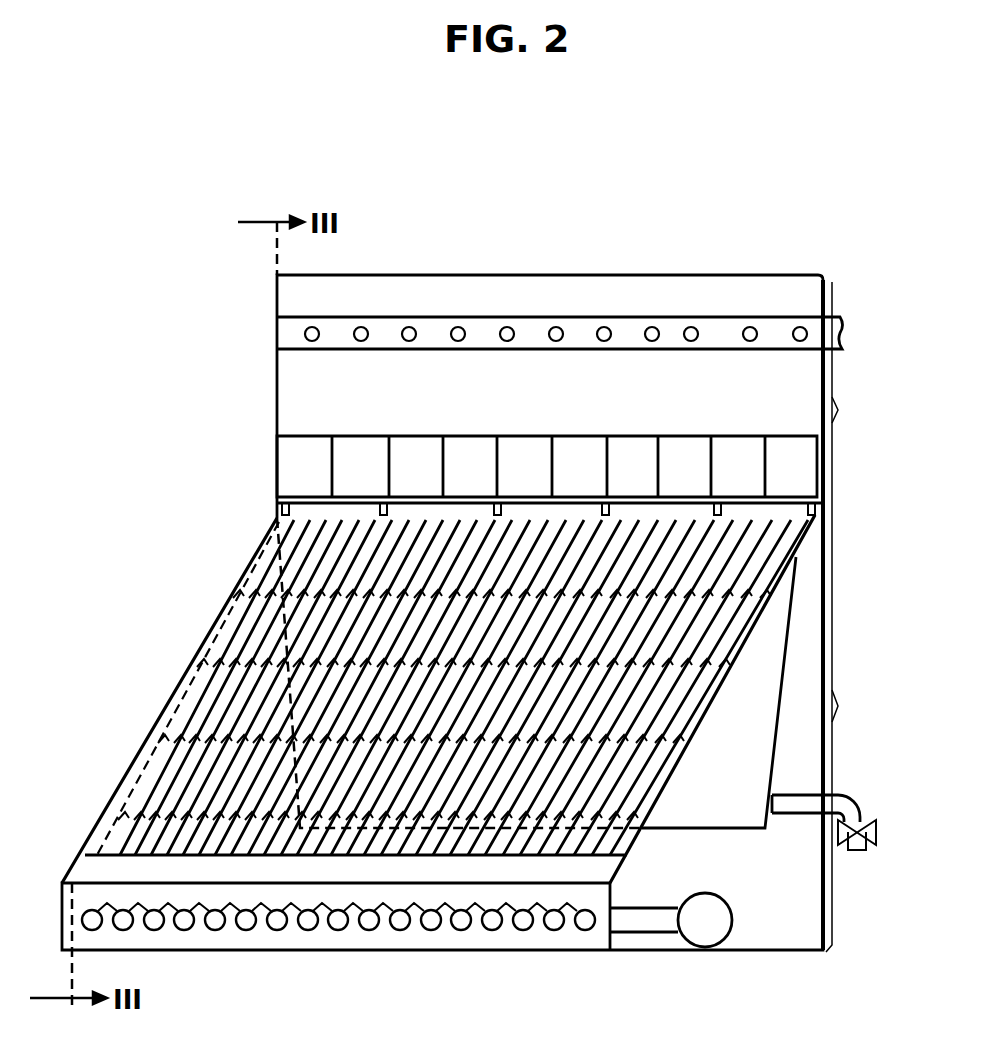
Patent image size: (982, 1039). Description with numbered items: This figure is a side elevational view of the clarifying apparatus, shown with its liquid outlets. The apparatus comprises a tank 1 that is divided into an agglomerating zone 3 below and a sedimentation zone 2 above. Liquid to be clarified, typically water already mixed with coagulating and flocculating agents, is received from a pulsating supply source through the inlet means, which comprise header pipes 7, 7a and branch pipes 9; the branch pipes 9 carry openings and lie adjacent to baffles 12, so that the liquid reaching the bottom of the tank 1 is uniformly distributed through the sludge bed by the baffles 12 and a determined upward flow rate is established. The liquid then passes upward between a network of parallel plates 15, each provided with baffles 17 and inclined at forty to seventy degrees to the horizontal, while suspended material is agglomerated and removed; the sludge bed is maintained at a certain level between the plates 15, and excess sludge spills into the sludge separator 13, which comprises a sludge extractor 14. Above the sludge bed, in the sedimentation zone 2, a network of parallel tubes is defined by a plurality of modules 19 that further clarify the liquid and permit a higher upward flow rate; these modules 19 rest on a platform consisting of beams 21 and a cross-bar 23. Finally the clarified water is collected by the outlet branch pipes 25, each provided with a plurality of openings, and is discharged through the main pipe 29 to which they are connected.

The tank 1 is at (277, 393).
The sedimentation zone 2 is at (844, 410).
The agglomerating zone 3 is at (846, 707).
The header pipe 7 is at (708, 934).
The header pipe 7a is at (650, 925).
The branch pipes 9 is at (334, 926).
The baffles 12 is at (132, 906).
The sludge separator 13 is at (787, 665).
The sludge extractor 14 is at (848, 811).
The parallel plates 15 is at (790, 556).
The baffles 17 is at (217, 815).
The modules 19 is at (800, 468).
The beams 21 is at (815, 507).
The cross-bar 23 is at (805, 495).
The branch pipes 25 is at (605, 327).
The main pipe 29 is at (822, 338).